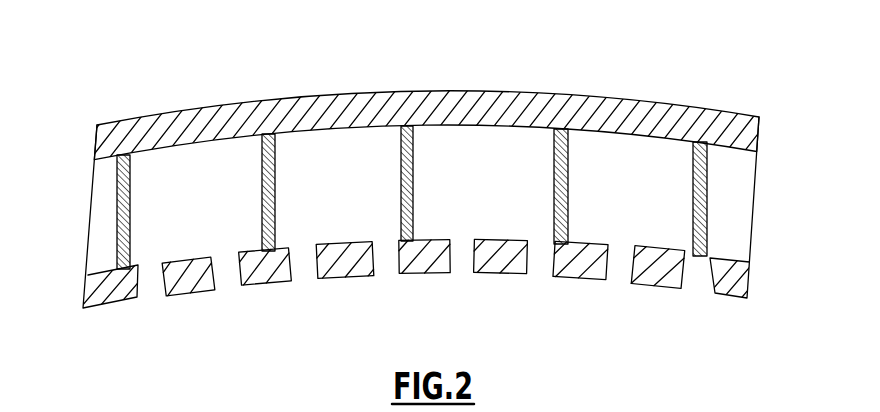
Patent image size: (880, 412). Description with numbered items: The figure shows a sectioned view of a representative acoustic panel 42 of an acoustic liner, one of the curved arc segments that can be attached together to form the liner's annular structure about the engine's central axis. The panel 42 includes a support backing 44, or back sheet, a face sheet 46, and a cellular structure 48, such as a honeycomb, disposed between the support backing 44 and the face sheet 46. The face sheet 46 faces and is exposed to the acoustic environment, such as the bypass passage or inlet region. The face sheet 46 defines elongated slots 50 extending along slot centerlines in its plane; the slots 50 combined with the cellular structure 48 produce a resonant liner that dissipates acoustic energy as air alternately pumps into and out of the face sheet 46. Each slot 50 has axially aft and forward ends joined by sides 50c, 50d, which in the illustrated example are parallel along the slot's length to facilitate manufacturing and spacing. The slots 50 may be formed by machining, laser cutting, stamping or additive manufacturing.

The acoustic panel 42 is at (633, 68).
The support backing 44 is at (308, 110).
The face sheet 46 is at (267, 274).
The cellular structure 48 is at (767, 155).
The elongated slots 50 is at (213, 263).
The slot side 50c is at (304, 293).
The slot side 50d is at (316, 248).